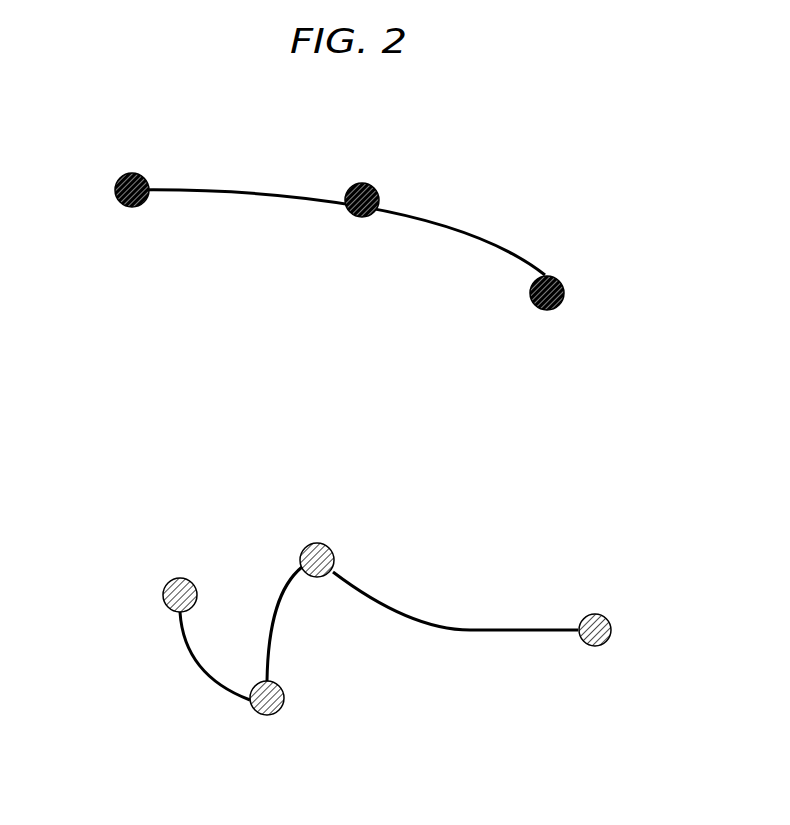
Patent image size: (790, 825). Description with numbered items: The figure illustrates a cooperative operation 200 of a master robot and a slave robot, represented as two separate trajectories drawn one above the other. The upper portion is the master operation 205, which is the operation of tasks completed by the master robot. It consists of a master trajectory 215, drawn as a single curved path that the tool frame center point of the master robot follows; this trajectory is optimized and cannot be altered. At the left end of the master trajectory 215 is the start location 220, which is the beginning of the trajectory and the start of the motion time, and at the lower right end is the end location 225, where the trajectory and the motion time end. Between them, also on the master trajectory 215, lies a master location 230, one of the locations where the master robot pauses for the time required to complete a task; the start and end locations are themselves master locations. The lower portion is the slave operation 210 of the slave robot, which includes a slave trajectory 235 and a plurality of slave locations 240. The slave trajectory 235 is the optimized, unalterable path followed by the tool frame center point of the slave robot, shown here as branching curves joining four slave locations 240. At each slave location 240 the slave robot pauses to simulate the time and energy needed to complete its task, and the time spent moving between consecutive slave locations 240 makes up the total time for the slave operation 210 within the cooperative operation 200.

The cooperative operation 200 is at (223, 102).
The master operation 205 is at (660, 160).
The slave operation 210 is at (665, 486).
The master trajectory 215 is at (463, 220).
The start location 220 is at (121, 178).
The end location 225 is at (563, 298).
The master location 230 is at (350, 187).
The slave trajectory 235 is at (460, 628).
The slave location 240 is at (178, 578).